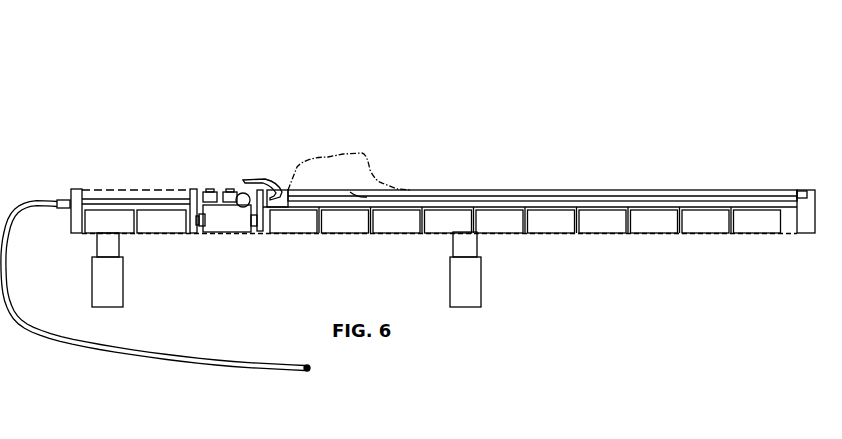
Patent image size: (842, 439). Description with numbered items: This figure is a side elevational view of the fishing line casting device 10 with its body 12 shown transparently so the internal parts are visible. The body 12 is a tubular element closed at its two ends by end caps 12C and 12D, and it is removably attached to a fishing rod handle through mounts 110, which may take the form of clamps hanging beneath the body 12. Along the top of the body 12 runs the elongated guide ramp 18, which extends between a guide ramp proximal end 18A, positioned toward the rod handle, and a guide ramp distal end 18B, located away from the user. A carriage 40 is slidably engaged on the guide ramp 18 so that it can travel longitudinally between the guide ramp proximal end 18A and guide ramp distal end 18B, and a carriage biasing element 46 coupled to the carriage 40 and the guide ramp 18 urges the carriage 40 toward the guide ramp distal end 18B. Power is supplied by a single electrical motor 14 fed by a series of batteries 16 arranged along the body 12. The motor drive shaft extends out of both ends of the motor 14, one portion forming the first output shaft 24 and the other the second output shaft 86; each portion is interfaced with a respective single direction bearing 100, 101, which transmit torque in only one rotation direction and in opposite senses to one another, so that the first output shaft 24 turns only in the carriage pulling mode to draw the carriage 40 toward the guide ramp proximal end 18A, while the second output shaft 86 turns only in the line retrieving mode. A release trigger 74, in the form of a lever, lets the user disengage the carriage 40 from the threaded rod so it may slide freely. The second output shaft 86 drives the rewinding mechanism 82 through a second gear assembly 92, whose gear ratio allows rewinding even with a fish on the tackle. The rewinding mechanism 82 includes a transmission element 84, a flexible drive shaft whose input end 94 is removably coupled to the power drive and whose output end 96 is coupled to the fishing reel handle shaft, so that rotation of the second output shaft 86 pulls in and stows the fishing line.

The fishing line casting device 10 is at (648, 67).
The body 12 is at (115, 188).
The end cap 12C is at (73, 188).
The end cap 12D is at (808, 187).
The electrical motor 14 is at (228, 225).
The batteries 16 is at (707, 225).
The guide ramp 18 is at (544, 195).
The guide ramp proximal end 18A is at (288, 189).
The guide ramp distal end 18B is at (805, 192).
The first output shaft 24 is at (262, 222).
The carriage 40 is at (347, 153).
The carriage biasing element 46 is at (742, 198).
The release trigger 74 is at (250, 175).
The rewinding mechanism 82 is at (135, 355).
The transmission element 84 is at (252, 366).
The second output shaft 86 is at (187, 229).
The second gear assembly 92 is at (193, 190).
The input end 94 is at (62, 203).
The output end 96 is at (309, 370).
The single direction bearing 100 is at (254, 227).
The single direction bearing 101 is at (193, 226).
The mount 110 is at (113, 275).